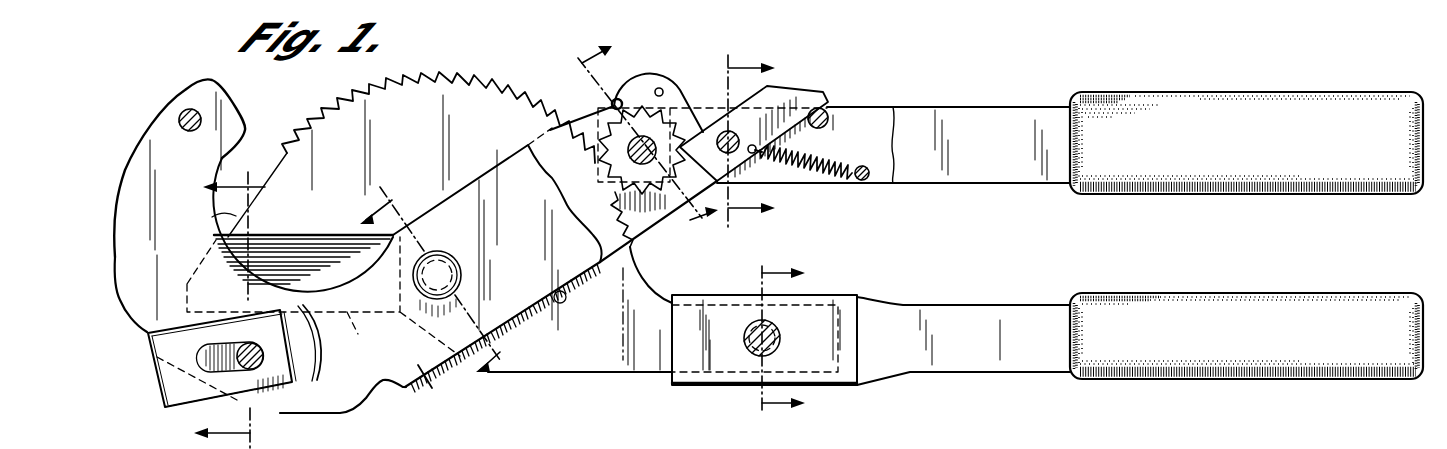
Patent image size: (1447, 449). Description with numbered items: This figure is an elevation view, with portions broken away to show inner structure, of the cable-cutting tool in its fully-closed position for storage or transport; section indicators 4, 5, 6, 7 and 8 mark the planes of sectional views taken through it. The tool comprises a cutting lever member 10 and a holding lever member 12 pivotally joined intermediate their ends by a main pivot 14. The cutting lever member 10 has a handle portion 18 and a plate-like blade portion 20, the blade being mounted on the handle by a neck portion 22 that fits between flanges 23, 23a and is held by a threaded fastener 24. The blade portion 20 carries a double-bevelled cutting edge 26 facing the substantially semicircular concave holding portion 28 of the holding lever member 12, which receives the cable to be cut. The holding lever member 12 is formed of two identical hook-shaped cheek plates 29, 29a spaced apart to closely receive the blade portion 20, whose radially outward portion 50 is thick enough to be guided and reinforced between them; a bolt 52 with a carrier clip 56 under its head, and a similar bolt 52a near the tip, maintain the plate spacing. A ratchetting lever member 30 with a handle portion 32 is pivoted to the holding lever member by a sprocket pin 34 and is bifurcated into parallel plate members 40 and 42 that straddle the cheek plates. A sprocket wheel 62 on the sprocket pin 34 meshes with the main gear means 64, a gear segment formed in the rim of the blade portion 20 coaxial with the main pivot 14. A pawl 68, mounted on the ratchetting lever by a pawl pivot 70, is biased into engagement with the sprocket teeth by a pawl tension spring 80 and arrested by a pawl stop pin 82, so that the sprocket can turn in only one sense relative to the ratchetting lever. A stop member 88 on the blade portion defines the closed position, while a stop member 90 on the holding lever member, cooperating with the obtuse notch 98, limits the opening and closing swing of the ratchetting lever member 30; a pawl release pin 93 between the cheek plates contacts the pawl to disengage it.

The cutting lever member 10 is at (603, 373).
The holding lever member 12 is at (436, 393).
The main pivot 14 is at (451, 272).
The handle portion 18 is at (1113, 296).
The blade portion 20 is at (455, 75).
The neck portion 22 is at (656, 378).
The flange 23 is at (868, 280).
The flange 23a is at (860, 386).
The threaded fastener 24 is at (782, 338).
The cutting edge 26 is at (364, 334).
The concave holding portion 28 is at (262, 270).
The cheek plate 29 is at (142, 178).
The cheek plate 29a is at (666, 80).
The ratchetting lever member 30 is at (972, 106).
The handle portion 32 is at (1143, 92).
The sprocket pin 34 is at (617, 196).
The plate member 40 is at (860, 106).
The plate member 42 is at (895, 184).
The radially outward portion 50 is at (214, 215).
The bolt 52 is at (272, 372).
The bolt 52a is at (180, 110).
The carrier clip 56 is at (200, 398).
The sprocket wheel 62 is at (592, 150).
The main gear means 64 is at (530, 93).
The pawl 68 is at (790, 102).
The pawl pivot 70 is at (740, 140).
The pawl tension spring 80 is at (820, 178).
The pawl stop pin 82 is at (828, 124).
The stop member 88 is at (564, 302).
The stop member 90 is at (617, 98).
The pawl release pin 93 is at (658, 88).
The obtuse notch 98 is at (670, 110).
The section line 4- 4 is at (231, 300).
The section line 5- 5 is at (446, 275).
The section line 6- 6 is at (637, 153).
The section line 7- 7 is at (751, 139).
The section line 8- 8 is at (766, 339).